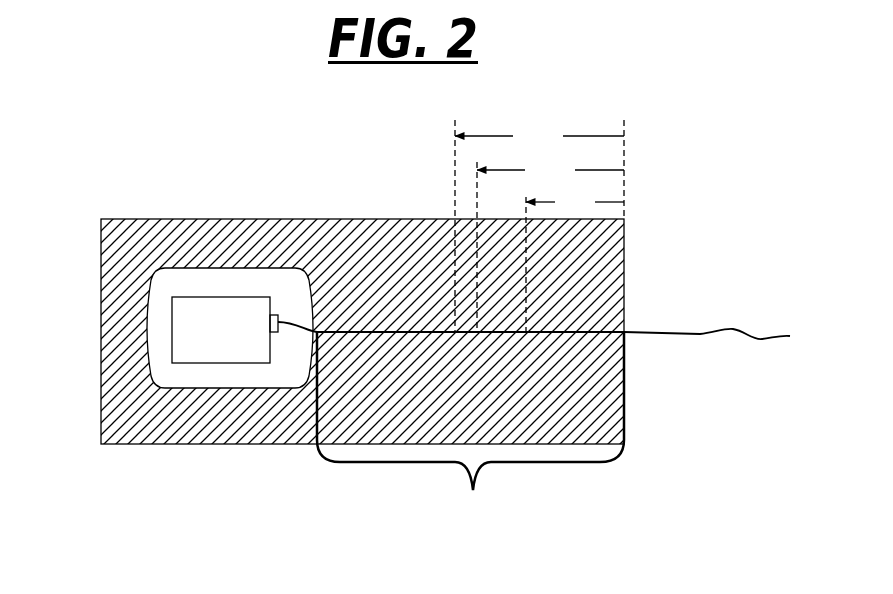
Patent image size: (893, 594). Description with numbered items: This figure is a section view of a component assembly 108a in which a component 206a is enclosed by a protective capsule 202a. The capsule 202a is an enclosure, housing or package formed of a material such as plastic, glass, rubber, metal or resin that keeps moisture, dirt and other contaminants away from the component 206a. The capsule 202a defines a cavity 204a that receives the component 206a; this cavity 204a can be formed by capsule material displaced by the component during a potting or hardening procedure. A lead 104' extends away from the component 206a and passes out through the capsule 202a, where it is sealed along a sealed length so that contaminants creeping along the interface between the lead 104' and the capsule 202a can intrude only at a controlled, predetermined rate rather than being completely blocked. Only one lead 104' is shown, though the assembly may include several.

The component assembly 108a is at (163, 112).
The protective capsule 202a is at (345, 247).
The cavity 204a is at (182, 266).
The component 206a is at (225, 330).
The lead 104' is at (534, 303).